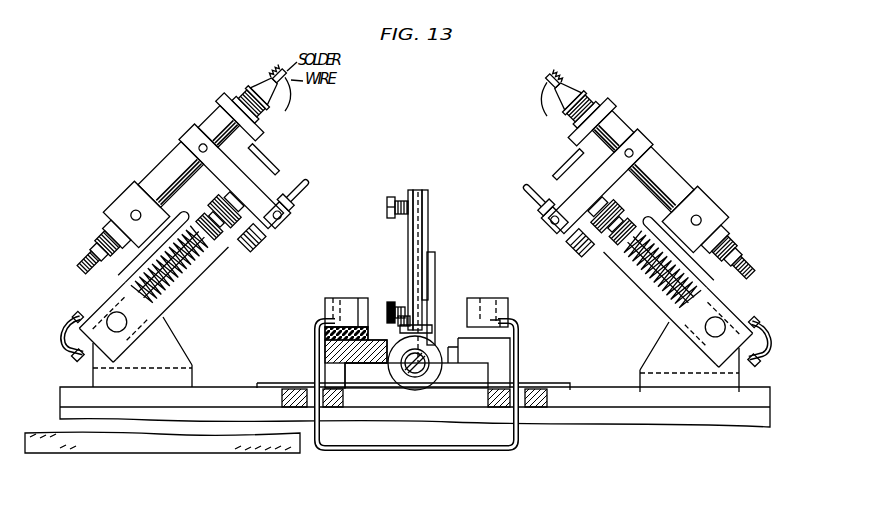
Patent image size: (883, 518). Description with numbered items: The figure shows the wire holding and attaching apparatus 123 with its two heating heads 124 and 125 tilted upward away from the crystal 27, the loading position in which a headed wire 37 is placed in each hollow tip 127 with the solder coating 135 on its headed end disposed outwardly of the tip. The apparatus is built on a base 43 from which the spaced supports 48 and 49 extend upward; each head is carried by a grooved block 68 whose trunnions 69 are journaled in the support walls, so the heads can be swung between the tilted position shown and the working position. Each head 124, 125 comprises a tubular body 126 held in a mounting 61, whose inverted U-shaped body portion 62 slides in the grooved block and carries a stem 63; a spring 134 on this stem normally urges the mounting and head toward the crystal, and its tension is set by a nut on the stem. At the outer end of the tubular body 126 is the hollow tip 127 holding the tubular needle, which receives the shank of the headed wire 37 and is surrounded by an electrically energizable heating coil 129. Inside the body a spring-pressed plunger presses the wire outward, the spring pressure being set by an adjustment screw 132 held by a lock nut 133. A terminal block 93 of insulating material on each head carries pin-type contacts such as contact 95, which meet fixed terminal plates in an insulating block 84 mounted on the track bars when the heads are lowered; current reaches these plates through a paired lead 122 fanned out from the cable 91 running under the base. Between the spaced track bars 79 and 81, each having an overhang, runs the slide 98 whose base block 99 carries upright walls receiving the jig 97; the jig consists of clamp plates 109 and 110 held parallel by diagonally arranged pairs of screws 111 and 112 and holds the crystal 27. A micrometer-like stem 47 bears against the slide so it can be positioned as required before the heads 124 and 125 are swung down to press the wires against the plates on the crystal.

The crystal 27 is at (420, 236).
The headed wire 37 is at (275, 70).
The base 43 is at (62, 402).
The micrometer-like stem 47 is at (393, 369).
The support 48 is at (93, 378).
The support 49 is at (740, 383).
The mounting 61 is at (190, 260).
The inverted U-shaped body portion 62 is at (186, 215).
The stem 63 is at (68, 357).
The grooved block 68 is at (158, 312).
The trunnions 69 is at (110, 320).
The track bar 79 is at (330, 368).
The track bar 81 is at (500, 375).
The insulating block 84 is at (360, 310).
The cable 91 is at (110, 447).
The terminal block 93 is at (218, 106).
The pin-type contact 95 is at (268, 152).
The jig 97 is at (418, 190).
The slide 98 is at (420, 328).
The base block 99 is at (460, 358).
The clamp plate 109 is at (410, 191).
The clamp plate 110 is at (428, 196).
The screw 111 is at (386, 207).
The screw 112 is at (390, 300).
The paired lead 122 is at (380, 448).
The wire holding and attaching apparatus 123 is at (437, 276).
The heating head 124 is at (158, 170).
The heating head 125 is at (666, 162).
The tubular body 126 is at (152, 181).
The hollow tip 127 is at (258, 86).
The heating coil 129 is at (285, 100).
The adjustment screw 132 is at (76, 267).
The lock nut 133 is at (92, 243).
The spring 134 is at (178, 272).
The solder coating 135 is at (281, 71).